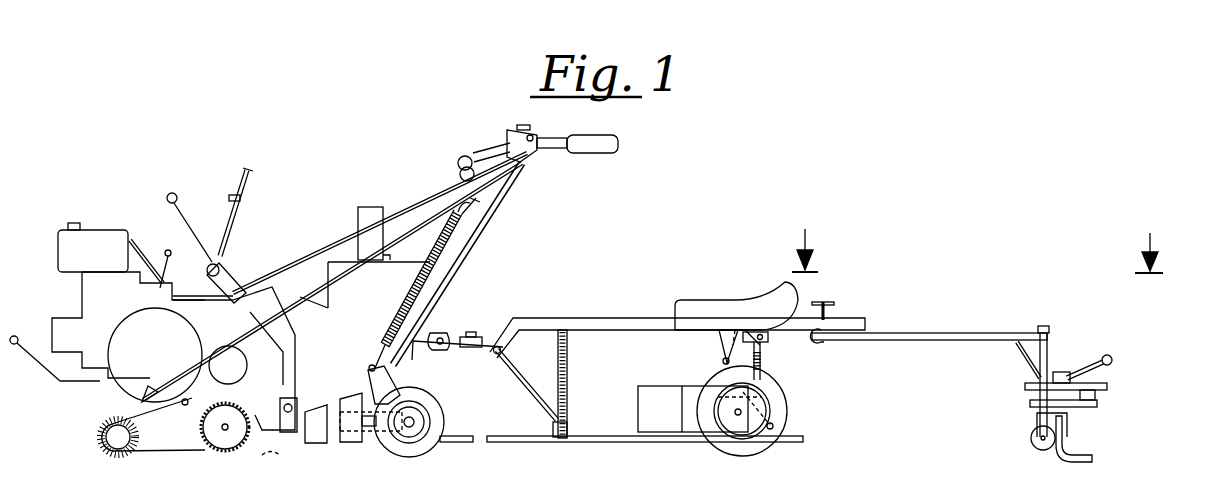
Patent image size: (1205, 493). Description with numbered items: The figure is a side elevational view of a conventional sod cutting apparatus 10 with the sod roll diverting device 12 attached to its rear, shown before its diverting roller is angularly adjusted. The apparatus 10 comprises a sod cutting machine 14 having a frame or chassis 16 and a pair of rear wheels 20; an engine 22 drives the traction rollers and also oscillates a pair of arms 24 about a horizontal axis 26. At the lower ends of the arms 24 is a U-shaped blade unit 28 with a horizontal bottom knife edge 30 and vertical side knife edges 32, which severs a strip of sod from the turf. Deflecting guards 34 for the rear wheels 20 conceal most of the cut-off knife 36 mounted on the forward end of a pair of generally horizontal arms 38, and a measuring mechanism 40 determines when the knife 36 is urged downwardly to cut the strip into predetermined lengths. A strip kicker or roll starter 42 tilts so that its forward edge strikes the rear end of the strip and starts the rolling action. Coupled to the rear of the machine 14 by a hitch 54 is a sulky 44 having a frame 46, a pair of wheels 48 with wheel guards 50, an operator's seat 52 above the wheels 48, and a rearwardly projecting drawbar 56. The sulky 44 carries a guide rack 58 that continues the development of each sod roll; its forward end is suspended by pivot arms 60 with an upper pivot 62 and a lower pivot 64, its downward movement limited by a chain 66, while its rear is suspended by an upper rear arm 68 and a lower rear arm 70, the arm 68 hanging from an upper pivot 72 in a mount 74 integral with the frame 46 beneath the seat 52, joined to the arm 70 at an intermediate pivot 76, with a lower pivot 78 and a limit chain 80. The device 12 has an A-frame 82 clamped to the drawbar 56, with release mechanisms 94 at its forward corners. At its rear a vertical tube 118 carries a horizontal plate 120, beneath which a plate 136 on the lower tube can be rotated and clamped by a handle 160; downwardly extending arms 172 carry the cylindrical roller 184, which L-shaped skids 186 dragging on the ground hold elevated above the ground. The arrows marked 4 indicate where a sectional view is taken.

The sod cutting apparatus 10 is at (275, 191).
The device for diverting sod rolls 12 is at (946, 291).
The sod cutting machine 14 is at (156, 232).
The frame or chassis 16 is at (75, 382).
The rear wheels 20 is at (421, 458).
The engine 22 is at (82, 292).
The arms 24 is at (237, 278).
The horizontal axis 26 is at (235, 272).
The U-shaped blade unit 28 is at (290, 432).
The horizontal bottom knife edge 30 is at (281, 458).
The vertical side knife edges 32 is at (227, 440).
The deflecting guards 34 is at (330, 387).
The cut-off knife 36 is at (357, 398).
The horizontal arms 38 is at (363, 442).
The measuring mechanism 40 is at (105, 456).
The strip kicker or roll starter 42 is at (454, 430).
The sulky 44 is at (603, 309).
The frame 46 is at (528, 311).
The wheels 48 is at (762, 457).
The wheel guards 50 is at (662, 385).
The operator's seat 52 is at (718, 300).
The hitch 54 is at (440, 327).
The drawbar 56 is at (853, 320).
The guide rack 58 is at (595, 441).
The pivot arms 60 is at (503, 374).
The upper pivot 62 is at (493, 353).
The lower pivot 64 is at (570, 421).
The chain 66 is at (570, 374).
The upper rear arm 68 is at (727, 357).
The lower rear arm 70 is at (770, 395).
The upper pivot 72 is at (735, 330).
The mount 74 is at (767, 343).
The intermediate pivot 76 is at (723, 362).
The lower pivot 78 is at (777, 418).
The limit chain 80 is at (765, 363).
The A-frame 82 is at (957, 331).
The release mechanisms 94 is at (827, 299).
The vertical tube 118 is at (1050, 345).
The horizontal plate 120 is at (1103, 383).
The plate 136 is at (1028, 401).
The handle 160 is at (1092, 356).
The arm 172 is at (1040, 423).
The cylindrical roller 184 is at (1040, 444).
The L-shaped skids 186 is at (1085, 452).
The section line 4 is at (977, 241).